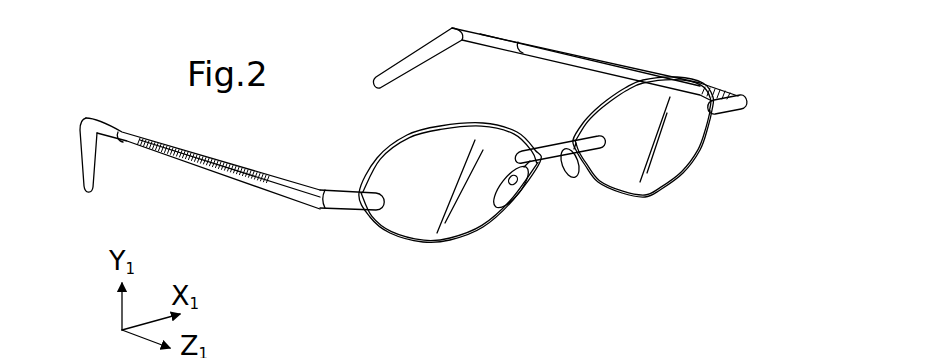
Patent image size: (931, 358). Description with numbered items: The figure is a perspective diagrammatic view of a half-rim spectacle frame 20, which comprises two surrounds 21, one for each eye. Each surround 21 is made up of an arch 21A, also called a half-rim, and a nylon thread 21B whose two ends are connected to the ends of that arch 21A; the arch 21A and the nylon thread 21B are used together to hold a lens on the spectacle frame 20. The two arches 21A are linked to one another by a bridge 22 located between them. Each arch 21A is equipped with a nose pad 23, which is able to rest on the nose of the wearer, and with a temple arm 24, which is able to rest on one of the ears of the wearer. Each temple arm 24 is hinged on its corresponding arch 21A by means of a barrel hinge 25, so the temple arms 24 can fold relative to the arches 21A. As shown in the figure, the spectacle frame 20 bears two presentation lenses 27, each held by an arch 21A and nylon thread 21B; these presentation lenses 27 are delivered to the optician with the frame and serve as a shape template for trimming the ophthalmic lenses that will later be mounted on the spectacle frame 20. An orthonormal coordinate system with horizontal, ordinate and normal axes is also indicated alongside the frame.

The half-rim spectacle frame 20 is at (310, 263).
The surround 21 is at (392, 140).
The arch 21A is at (442, 123).
The nylon thread 21B is at (383, 224).
The bridge 22 is at (573, 126).
The nose pad 23 is at (503, 202).
The temple arm 24 is at (264, 181).
The barrel hinge 25 is at (330, 186).
The presentation lens 27 is at (484, 222).